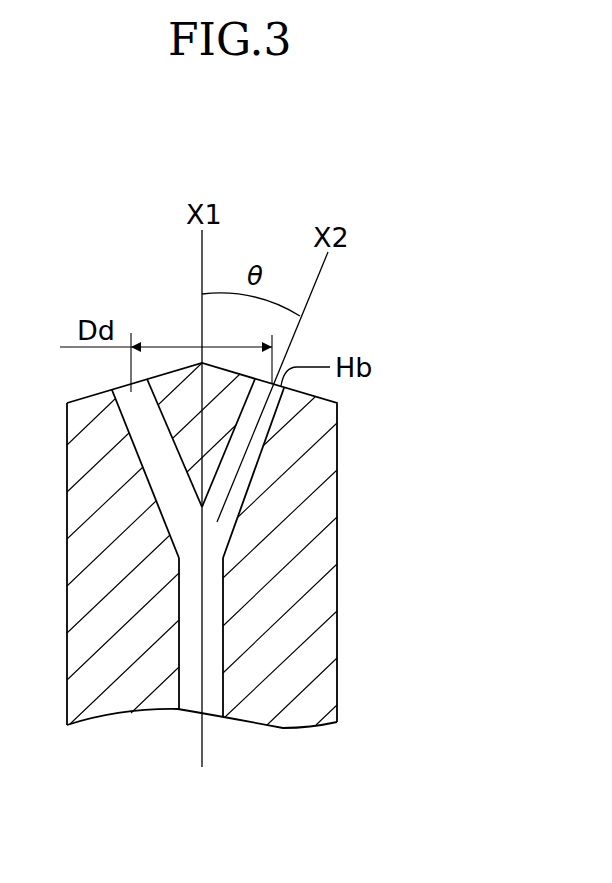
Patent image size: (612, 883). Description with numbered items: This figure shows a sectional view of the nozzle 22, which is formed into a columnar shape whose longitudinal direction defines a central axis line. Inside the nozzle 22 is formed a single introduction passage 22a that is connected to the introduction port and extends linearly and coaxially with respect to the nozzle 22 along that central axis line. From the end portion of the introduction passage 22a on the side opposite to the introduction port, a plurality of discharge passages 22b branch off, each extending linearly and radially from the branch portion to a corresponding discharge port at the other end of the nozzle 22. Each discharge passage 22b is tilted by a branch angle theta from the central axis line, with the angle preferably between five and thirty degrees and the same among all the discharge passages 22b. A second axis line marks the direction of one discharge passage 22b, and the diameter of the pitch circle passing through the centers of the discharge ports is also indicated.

The nozzle 22 is at (337, 612).
The introduction passage 22a is at (212, 678).
The discharge passage 22b is at (235, 482).